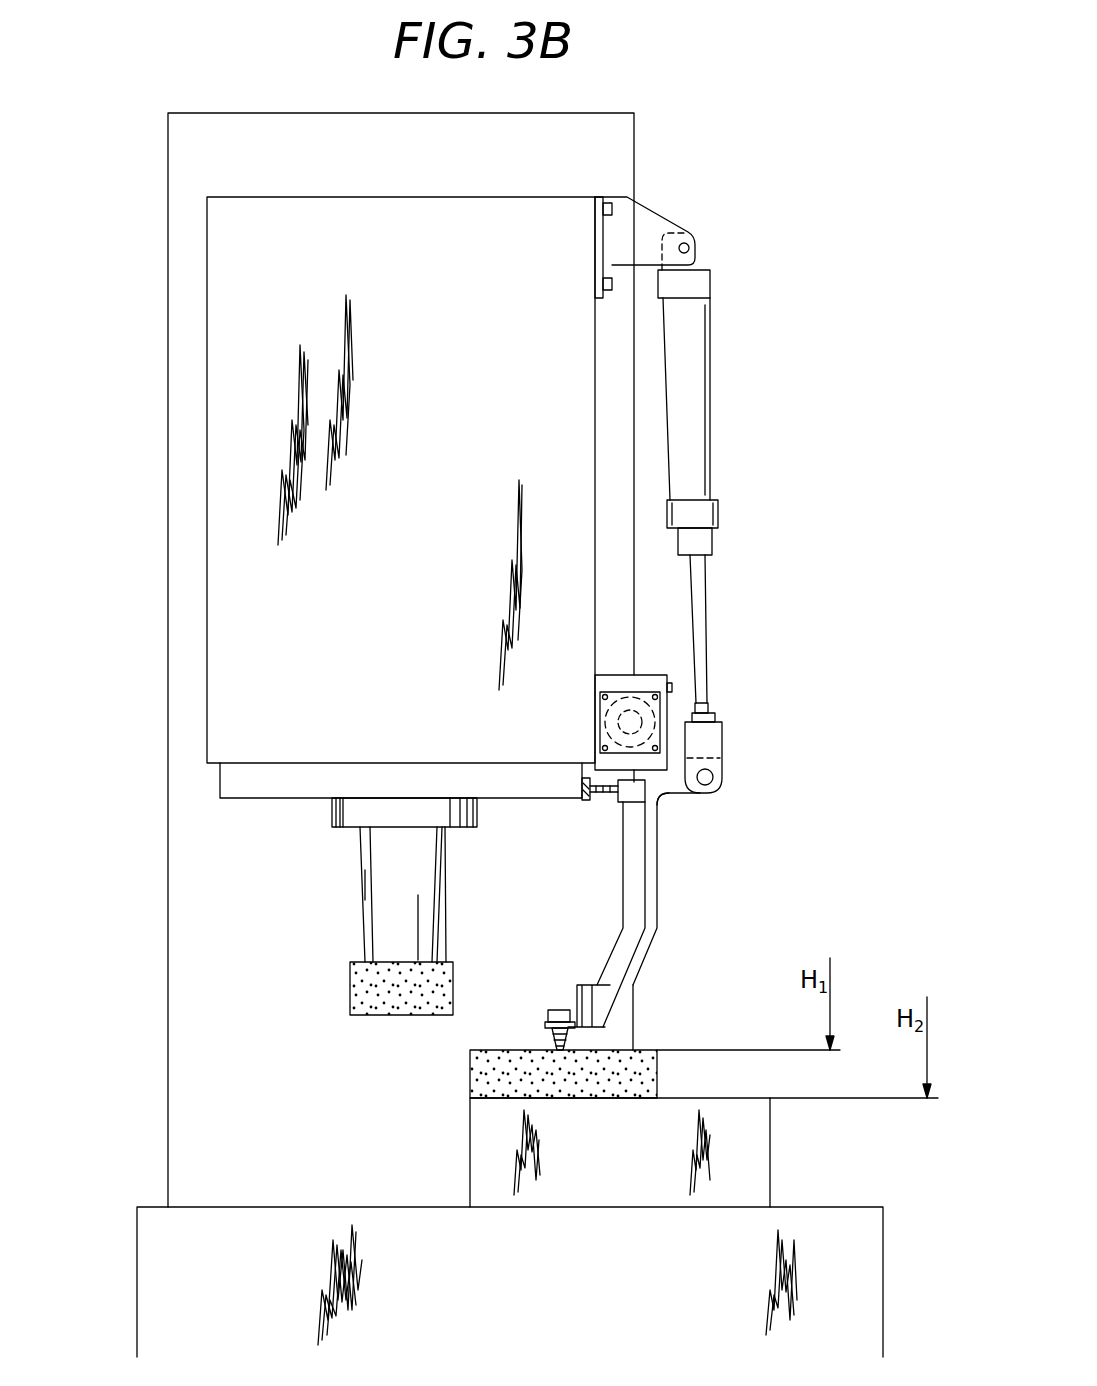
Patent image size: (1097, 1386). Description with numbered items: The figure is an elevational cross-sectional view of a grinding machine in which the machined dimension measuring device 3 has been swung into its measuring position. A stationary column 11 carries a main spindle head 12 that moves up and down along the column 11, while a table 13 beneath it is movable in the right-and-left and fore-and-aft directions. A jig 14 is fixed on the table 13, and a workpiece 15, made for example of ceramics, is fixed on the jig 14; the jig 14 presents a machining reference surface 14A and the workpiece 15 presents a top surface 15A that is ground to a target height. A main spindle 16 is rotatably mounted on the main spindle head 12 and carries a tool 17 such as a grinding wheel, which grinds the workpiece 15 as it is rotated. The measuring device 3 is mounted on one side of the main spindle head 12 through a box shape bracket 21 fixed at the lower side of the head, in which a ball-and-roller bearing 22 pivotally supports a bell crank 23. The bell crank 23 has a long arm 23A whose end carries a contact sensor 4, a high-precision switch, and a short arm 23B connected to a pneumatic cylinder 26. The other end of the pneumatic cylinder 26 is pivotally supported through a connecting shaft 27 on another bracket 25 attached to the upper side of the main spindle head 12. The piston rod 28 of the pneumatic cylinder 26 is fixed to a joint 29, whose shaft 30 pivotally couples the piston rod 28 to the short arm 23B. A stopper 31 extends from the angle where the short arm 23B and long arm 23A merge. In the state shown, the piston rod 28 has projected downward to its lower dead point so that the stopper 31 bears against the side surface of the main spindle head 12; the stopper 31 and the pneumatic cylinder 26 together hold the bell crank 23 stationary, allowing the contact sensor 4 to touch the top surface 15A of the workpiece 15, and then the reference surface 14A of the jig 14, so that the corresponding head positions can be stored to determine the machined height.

The machined dimension measuring device 3 is at (745, 393).
The contact sensor 4 is at (555, 1045).
The stationary column 11 is at (168, 1070).
The main spindle head 12 is at (214, 393).
The table 13 is at (878, 1260).
The jig 14 is at (470, 1153).
The machining reference surface 14A is at (710, 1097).
The workpiece 15 is at (470, 1077).
The top surface 15A is at (650, 1048).
The main spindle 16 is at (333, 810).
The tool 17 is at (350, 995).
The box shape bracket 21 is at (610, 672).
The ball-and-roller bearing 22 is at (608, 716).
The bell crank 23 is at (658, 902).
The long arm 23A is at (650, 962).
The short arm 23B is at (673, 787).
The bracket 25 is at (650, 215).
The pneumatic cylinder 26 is at (697, 342).
The connecting shaft 27 is at (690, 240).
The piston rod 28 is at (700, 597).
The joint 29 is at (714, 732).
The shaft 30 is at (717, 778).
The stopper 31 is at (596, 800).